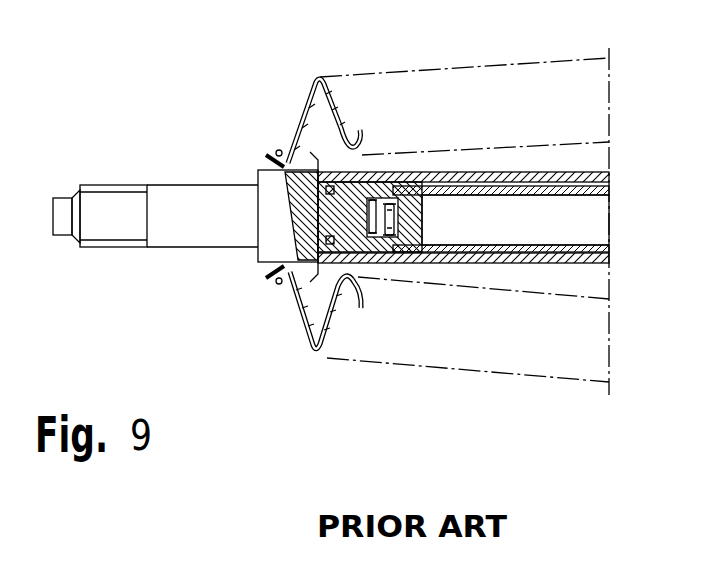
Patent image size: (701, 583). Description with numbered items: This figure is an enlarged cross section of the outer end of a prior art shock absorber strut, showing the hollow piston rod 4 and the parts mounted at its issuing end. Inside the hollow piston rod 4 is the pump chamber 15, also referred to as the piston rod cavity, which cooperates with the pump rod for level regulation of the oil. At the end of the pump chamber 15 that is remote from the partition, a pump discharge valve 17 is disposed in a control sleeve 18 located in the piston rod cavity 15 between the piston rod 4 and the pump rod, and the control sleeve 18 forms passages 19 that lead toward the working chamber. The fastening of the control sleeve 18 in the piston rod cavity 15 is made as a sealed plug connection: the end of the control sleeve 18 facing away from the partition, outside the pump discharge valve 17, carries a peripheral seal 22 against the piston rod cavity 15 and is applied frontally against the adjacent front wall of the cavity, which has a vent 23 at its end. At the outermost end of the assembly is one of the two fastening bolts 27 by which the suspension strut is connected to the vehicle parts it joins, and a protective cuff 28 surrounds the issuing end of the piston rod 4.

The hollow piston rod 4 is at (535, 182).
The pump chamber 15 is at (540, 222).
The pump discharge valve 17 is at (380, 233).
The control sleeve 18 is at (415, 235).
The passages 19 is at (461, 185).
The peripheral seal 22 is at (337, 272).
The vent 23 is at (318, 160).
The fastening bolt 27 is at (105, 222).
The protective cuff 28 is at (305, 347).